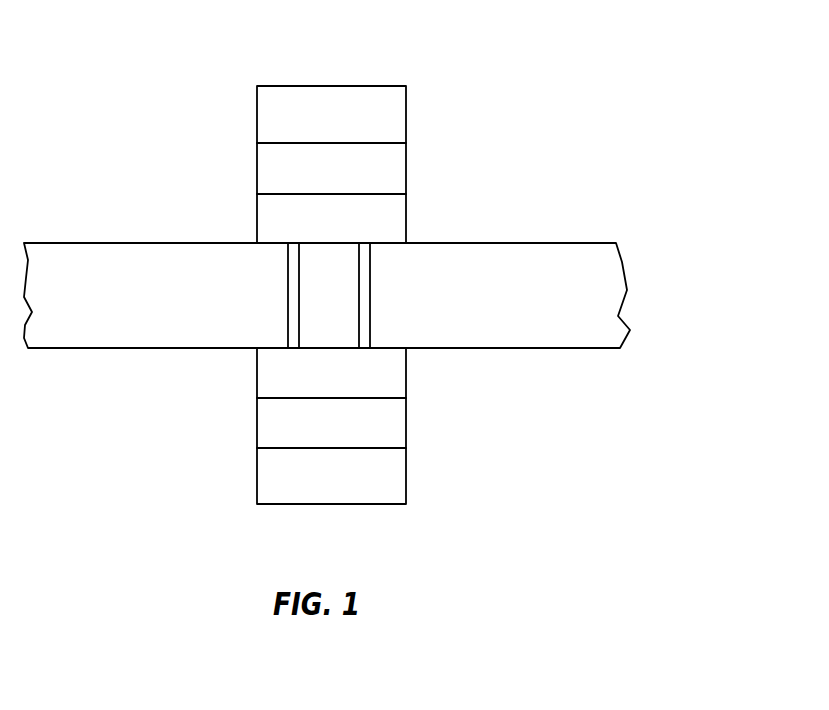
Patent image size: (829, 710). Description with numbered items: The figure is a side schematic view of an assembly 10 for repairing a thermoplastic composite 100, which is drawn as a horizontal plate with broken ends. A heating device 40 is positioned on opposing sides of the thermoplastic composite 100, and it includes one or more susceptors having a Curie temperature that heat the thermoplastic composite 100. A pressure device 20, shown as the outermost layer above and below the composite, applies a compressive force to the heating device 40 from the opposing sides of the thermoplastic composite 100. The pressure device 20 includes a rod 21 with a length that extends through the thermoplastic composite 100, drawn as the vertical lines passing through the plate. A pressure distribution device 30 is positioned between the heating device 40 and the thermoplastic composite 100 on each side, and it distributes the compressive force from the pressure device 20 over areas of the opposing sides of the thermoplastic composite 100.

The assembly 10 is at (153, 75).
The pressure device 20 is at (406, 107).
The rod 21 is at (319, 288).
The pressure distribution device 30 is at (406, 216).
The heating device 40 is at (406, 161).
The thermoplastic composite 100 is at (582, 273).